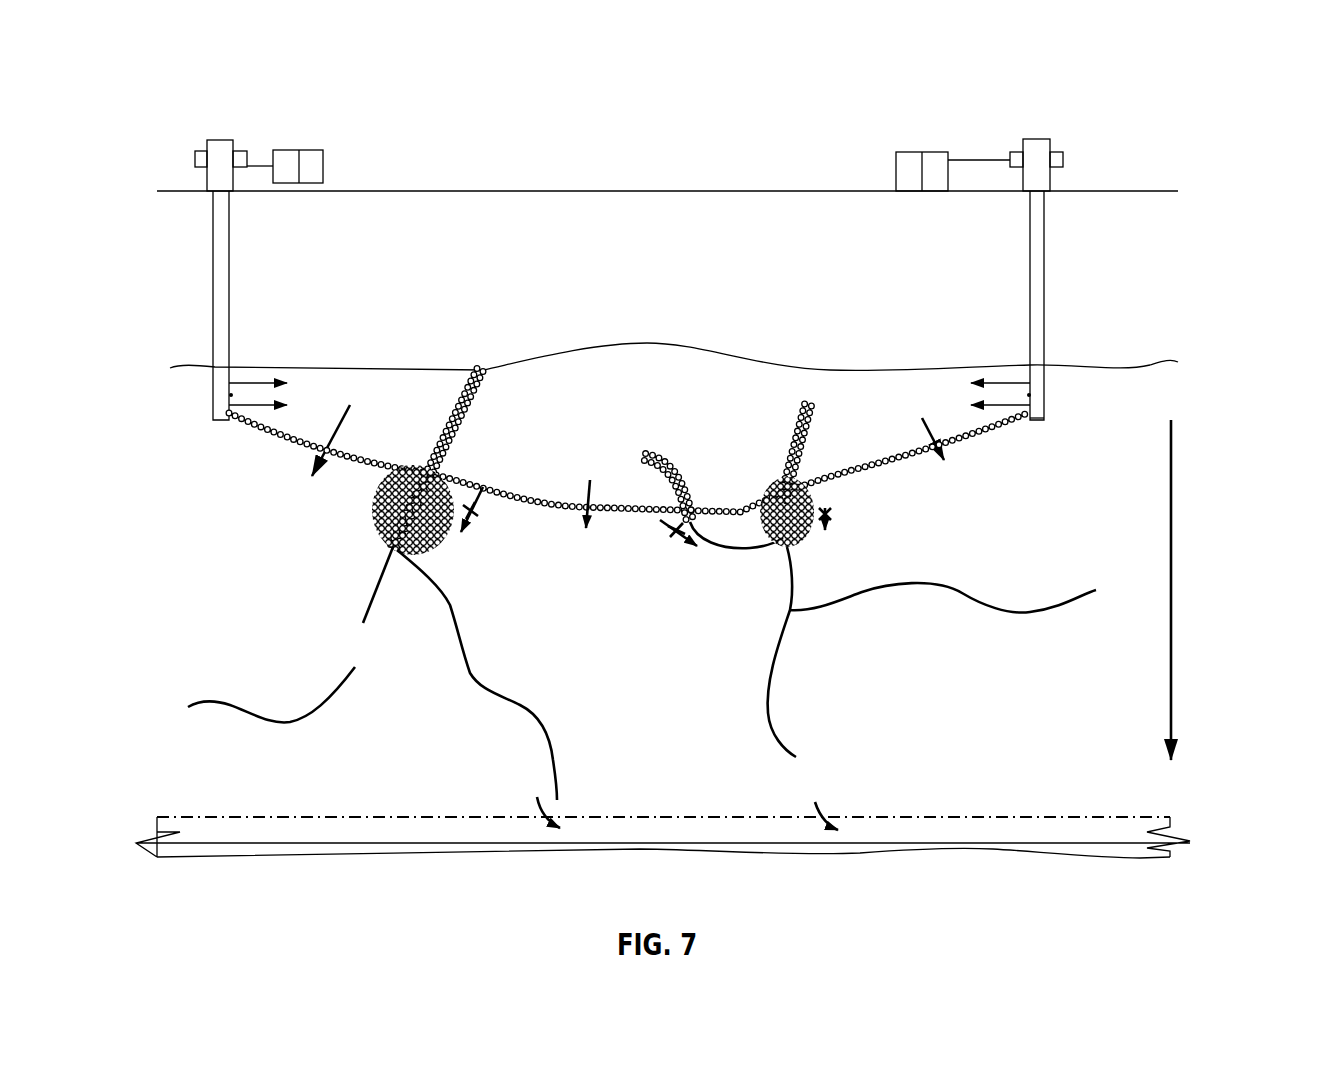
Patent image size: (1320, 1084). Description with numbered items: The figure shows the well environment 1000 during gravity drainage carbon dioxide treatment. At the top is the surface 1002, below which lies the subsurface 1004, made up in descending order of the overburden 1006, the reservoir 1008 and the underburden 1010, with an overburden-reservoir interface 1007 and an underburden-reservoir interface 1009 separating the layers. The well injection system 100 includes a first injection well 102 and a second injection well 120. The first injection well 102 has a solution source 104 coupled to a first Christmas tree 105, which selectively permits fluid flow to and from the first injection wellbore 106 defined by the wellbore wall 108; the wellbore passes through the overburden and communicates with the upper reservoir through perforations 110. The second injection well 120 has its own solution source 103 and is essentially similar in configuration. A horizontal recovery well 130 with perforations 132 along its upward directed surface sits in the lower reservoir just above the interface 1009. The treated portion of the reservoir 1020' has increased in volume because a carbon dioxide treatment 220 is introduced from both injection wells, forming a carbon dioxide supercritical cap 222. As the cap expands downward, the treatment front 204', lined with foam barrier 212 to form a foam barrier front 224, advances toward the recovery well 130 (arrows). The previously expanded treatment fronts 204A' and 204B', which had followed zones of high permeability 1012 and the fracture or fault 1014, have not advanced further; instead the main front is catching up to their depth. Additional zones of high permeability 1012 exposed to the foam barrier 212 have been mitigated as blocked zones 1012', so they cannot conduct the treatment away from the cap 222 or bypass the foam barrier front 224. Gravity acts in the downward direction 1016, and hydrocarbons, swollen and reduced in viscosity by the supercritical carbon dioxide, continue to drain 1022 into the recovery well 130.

The well injection system 100 is at (738, 70).
The first injection well 102 is at (1036, 139).
The solution source 103 is at (310, 183).
The solution source 104 is at (932, 152).
The first Christmas tree 105 is at (1065, 158).
The first injection wellbore 106 is at (1030, 358).
The wellbore wall 108 is at (1030, 262).
The perforations 110 is at (1037, 420).
The second injection well 120 is at (218, 140).
The recovery well 130 is at (432, 810).
The perforations 132 is at (983, 810).
The foam barrier 212 is at (585, 490).
The CO2 treatment 220 is at (315, 323).
The CO2 supercritical cap 222 is at (610, 415).
The foam barrier front 224 is at (900, 435).
The treatment front 204' is at (282, 451).
The expanded treatment front 204A' is at (391, 496).
The expanded treatment front 204B' is at (832, 475).
The well environment 1000 is at (618, 183).
The surface 1002 is at (710, 190).
The subsurface 1004 is at (737, 277).
The overburden 1006 is at (578, 323).
The overburden-reservoir interface 1007 is at (850, 375).
The reservoir 1008 is at (1082, 720).
The underburden-reservoir interface 1009 is at (800, 853).
The underburden 1010 is at (560, 902).
The zones of high permeability 1012 is at (828, 654).
The blocked zones of high permeability 1012' is at (596, 673).
The fracture or fault 1014 is at (300, 665).
The downward direction 1016 is at (1174, 536).
The treated portion of the reservoir 1020' is at (713, 499).
The draining 1022 is at (574, 816).